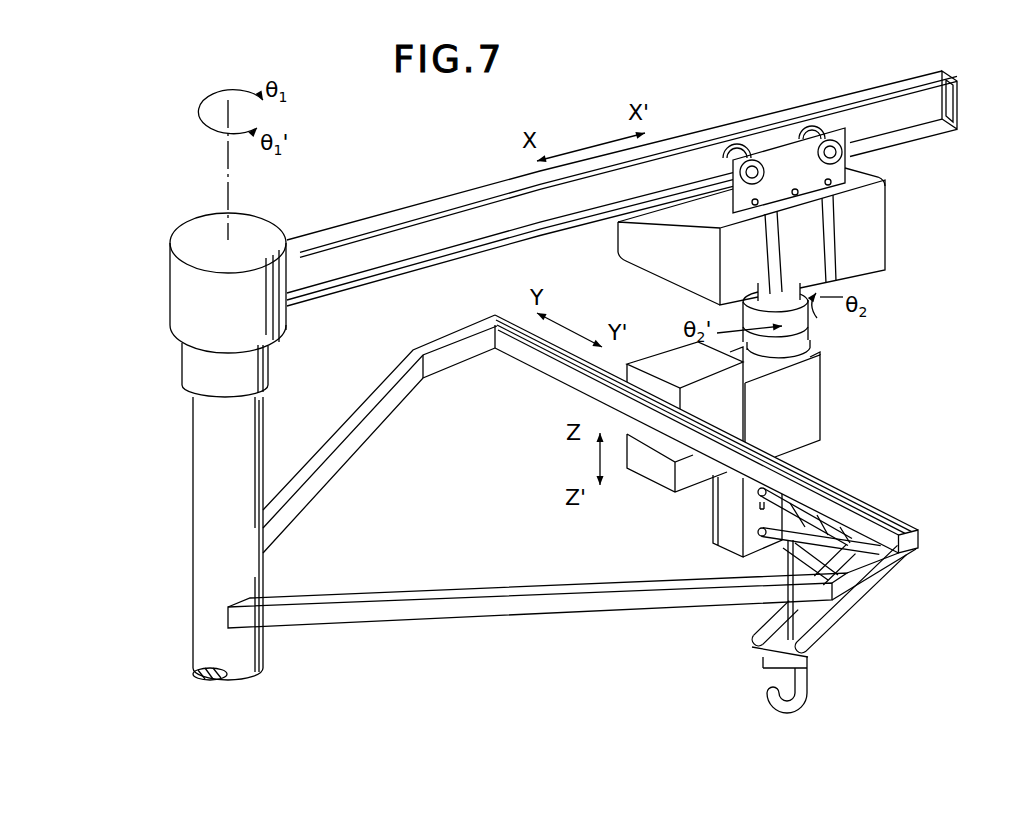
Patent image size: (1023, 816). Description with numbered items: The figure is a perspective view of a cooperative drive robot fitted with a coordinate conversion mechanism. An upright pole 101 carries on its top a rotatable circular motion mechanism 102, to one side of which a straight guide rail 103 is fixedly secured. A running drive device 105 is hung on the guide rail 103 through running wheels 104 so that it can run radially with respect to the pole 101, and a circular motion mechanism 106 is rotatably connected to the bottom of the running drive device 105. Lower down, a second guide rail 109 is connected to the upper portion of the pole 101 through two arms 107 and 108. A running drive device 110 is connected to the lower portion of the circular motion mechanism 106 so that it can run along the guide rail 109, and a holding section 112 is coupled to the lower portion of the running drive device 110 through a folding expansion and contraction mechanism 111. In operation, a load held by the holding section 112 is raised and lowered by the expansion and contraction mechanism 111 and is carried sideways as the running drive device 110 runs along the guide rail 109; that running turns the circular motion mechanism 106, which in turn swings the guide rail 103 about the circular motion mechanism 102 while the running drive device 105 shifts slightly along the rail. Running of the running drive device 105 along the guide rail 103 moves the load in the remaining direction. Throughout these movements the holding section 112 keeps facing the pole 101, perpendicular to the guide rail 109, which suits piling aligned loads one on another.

The pole 101 is at (190, 470).
The rotatable circular motion mechanism 102 is at (183, 233).
The guide rail 103 is at (427, 213).
The running wheels 104 is at (725, 160).
The running drive device 105 is at (887, 228).
The circular motion mechanism 106 is at (813, 322).
The arm 107 is at (558, 612).
The arm 108 is at (362, 412).
The guide rail 109 is at (852, 493).
The running drive device 110 is at (652, 470).
The folding expansion and contraction mechanism 111 is at (857, 607).
The holding section 112 is at (725, 679).